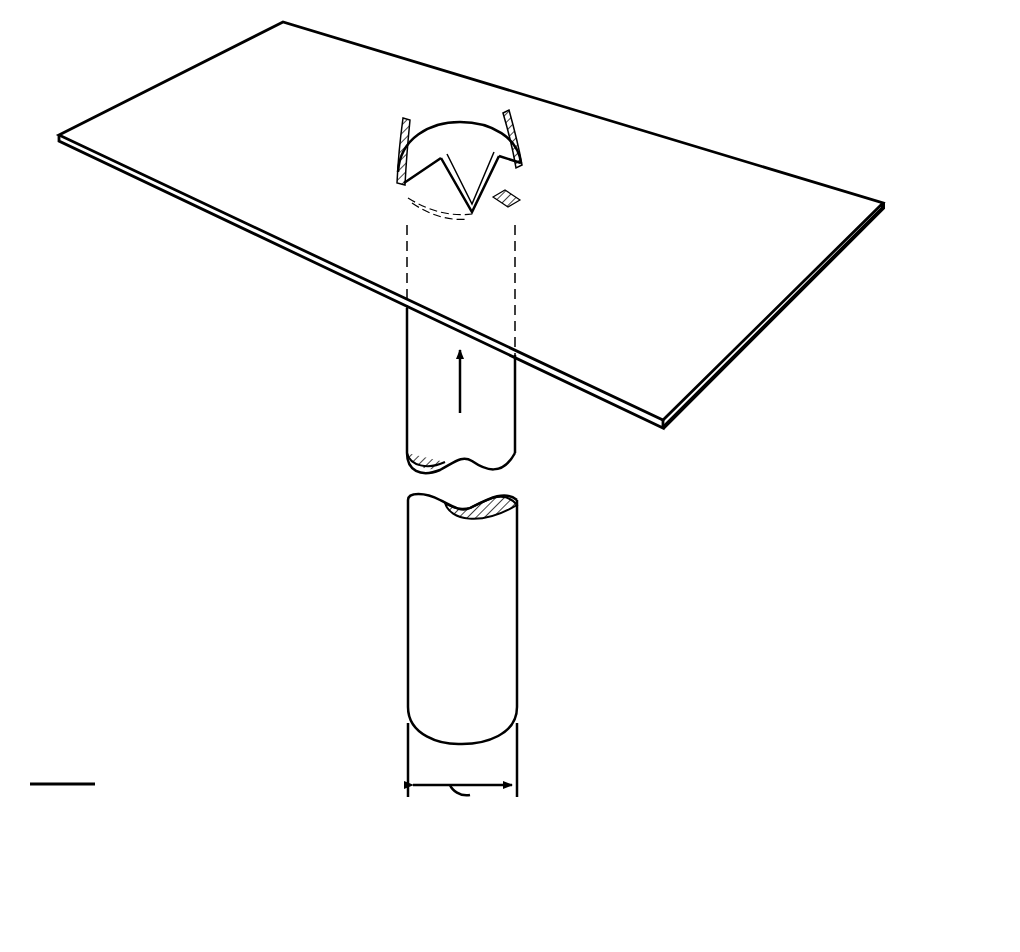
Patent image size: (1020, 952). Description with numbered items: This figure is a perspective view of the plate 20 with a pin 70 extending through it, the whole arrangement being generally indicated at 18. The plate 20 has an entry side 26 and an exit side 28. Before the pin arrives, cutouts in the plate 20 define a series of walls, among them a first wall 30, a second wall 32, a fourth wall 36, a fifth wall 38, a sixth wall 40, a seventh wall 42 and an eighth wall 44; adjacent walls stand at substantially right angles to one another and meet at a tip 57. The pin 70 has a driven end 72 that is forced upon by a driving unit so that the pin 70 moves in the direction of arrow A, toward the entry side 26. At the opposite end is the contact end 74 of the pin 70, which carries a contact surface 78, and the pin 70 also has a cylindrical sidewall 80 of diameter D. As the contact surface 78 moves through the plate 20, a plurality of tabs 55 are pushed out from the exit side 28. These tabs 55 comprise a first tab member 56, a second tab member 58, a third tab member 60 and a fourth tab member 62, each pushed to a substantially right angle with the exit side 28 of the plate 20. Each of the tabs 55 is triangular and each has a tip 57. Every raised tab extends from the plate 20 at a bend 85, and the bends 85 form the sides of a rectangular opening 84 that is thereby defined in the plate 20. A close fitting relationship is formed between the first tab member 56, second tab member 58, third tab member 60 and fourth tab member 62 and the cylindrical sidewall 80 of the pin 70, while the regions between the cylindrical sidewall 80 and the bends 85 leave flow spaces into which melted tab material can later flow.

The fastener assembly 18 is at (648, 115).
The plate 20 is at (299, 62).
The entry side 26 is at (162, 190).
The exit side 28 is at (728, 182).
The first wall 30 is at (412, 173).
The second wall 32 is at (403, 153).
The fourth wall 36 is at (493, 118).
The fifth wall 38 is at (498, 140).
The sixth wall 40 is at (513, 173).
The seventh wall 42 is at (505, 183).
The eighth wall 44 is at (478, 197).
The plurality of tabs 55 is at (400, 117).
The first tab member 56 is at (437, 192).
The tip 57 is at (410, 137).
The second tab member 58 is at (410, 138).
The third tab member 60 is at (497, 123).
The fourth tab member 62 is at (497, 193).
The pin 70 is at (508, 425).
The driven end 72 is at (542, 690).
The contact end 74 is at (452, 140).
The contact surface 78 is at (503, 150).
The cylindrical sidewall 80 is at (503, 385).
The rectangular opening 84 is at (473, 213).
The bend 85 is at (480, 200).